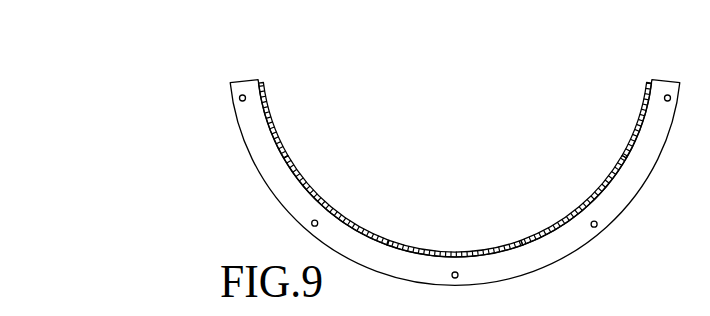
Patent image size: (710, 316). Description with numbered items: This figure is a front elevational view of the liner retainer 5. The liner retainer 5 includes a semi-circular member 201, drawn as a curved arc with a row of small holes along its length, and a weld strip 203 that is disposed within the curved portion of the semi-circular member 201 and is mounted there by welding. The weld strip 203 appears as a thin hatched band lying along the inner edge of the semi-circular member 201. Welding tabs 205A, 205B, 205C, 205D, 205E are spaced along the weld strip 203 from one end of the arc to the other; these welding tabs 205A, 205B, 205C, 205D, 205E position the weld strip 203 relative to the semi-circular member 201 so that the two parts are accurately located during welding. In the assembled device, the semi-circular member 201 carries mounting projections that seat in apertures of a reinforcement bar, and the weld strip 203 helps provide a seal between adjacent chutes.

The liner retainer 5 is at (217, 146).
The semi-circular member 201 is at (560, 252).
The weld strip 203 is at (515, 250).
The welding tab 205A is at (648, 93).
The welding tab 205B is at (582, 213).
The welding tab 205C is at (457, 258).
The welding tab 205D is at (323, 211).
The welding tab 205E is at (261, 92).